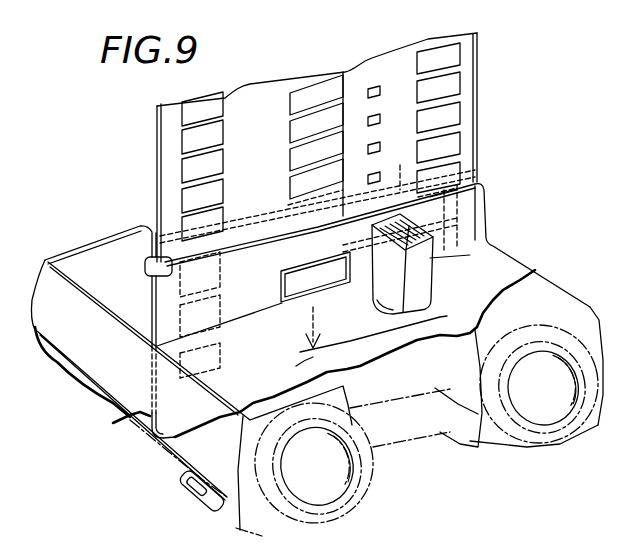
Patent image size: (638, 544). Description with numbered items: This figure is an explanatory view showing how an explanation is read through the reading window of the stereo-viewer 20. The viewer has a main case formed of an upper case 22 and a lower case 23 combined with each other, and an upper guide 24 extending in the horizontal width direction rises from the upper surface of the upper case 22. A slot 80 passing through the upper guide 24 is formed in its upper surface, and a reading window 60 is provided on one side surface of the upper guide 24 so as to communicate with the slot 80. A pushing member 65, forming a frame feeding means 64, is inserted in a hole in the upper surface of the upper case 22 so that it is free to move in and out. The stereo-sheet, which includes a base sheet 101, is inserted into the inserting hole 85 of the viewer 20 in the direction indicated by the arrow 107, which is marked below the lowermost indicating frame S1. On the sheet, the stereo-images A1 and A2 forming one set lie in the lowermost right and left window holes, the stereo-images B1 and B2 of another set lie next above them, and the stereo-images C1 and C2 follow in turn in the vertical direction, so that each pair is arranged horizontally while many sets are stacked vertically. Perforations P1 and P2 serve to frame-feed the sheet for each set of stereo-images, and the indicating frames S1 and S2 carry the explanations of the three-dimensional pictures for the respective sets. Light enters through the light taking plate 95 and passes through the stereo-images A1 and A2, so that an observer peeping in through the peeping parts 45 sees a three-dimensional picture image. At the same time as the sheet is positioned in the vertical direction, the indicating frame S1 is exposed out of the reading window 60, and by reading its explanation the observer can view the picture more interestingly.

The stereo-viewer 20 is at (513, 243).
The upper case 22 is at (88, 370).
The lower case 23 is at (108, 410).
The upper guide 24 is at (484, 214).
The peeping parts 45 is at (355, 492).
The reading window 60 is at (313, 291).
The frame feeding means 64 is at (403, 312).
The pushing member 65 is at (392, 285).
The slot 80 is at (150, 268).
The inserting hole 85 is at (250, 241).
The light taking plate 95 is at (73, 250).
The base sheet 101 is at (190, 423).
The arrow 107 is at (285, 372).
The indicating frame S1 is at (283, 268).
The indicating frame S2 is at (293, 232).
The stereo-image A1 is at (457, 287).
The stereo-image A2 is at (187, 382).
The stereo-image B1 is at (458, 265).
The stereo-image B2 is at (156, 348).
The stereo-image C1 is at (461, 233).
The stereo-image C2 is at (153, 325).
The perforation P1 is at (326, 324).
The perforation P2 is at (401, 247).